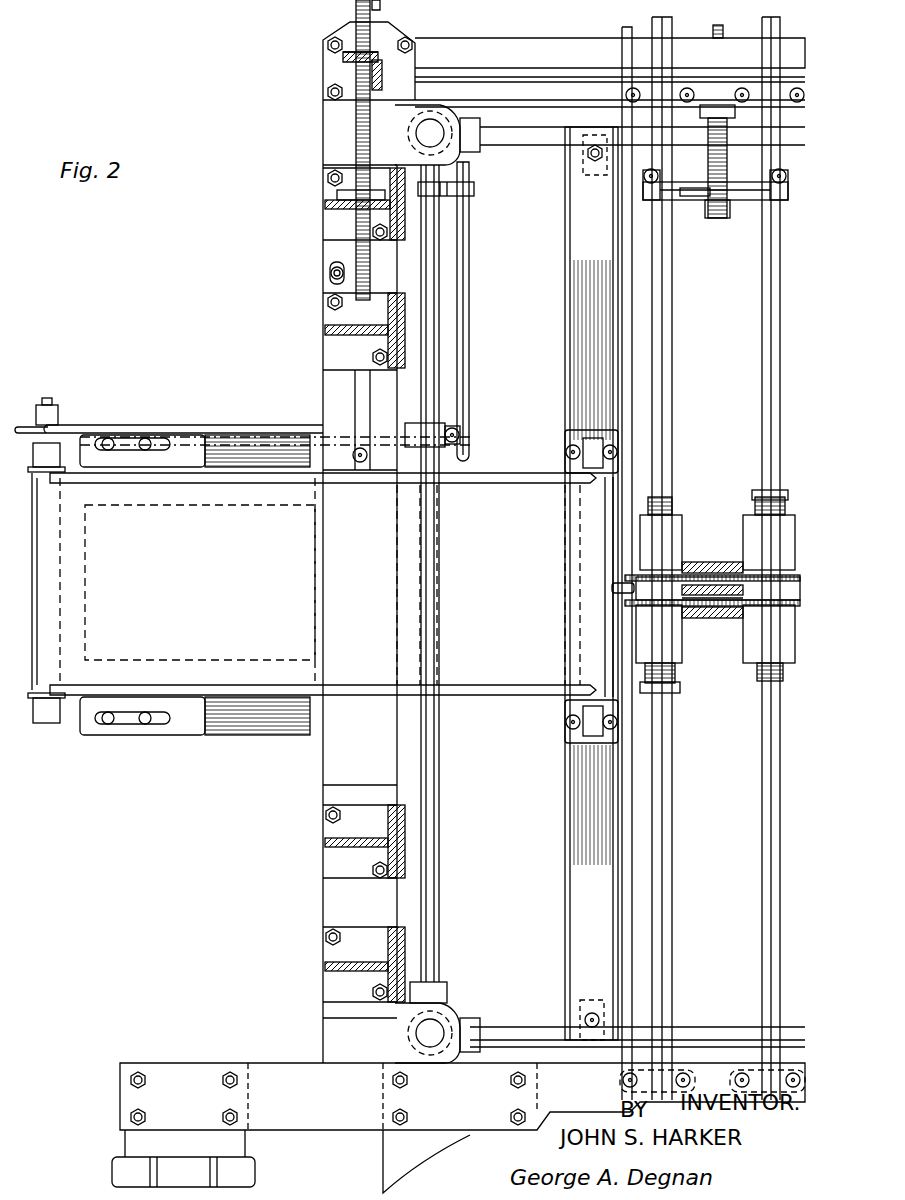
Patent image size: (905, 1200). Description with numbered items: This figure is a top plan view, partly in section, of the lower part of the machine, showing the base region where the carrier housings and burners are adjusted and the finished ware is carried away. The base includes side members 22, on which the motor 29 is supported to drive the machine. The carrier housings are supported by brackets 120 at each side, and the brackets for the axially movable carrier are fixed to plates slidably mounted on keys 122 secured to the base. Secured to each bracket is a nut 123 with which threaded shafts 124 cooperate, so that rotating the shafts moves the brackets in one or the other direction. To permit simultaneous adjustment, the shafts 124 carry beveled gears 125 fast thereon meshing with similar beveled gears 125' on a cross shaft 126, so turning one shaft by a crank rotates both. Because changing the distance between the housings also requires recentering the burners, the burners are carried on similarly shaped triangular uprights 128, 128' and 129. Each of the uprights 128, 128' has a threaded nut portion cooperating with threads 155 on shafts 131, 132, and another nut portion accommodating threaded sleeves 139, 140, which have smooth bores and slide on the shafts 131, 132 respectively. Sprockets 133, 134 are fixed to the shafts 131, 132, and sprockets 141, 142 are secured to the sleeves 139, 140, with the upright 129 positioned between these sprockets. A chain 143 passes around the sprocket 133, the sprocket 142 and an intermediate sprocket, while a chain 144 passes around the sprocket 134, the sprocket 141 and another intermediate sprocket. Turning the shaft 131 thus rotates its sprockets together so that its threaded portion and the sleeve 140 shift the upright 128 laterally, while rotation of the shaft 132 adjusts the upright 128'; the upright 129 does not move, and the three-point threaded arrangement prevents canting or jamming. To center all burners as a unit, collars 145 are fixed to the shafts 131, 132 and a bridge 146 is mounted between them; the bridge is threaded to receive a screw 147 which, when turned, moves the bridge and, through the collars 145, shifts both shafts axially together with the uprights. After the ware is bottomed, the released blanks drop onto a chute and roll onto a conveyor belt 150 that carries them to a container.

The side members 22 is at (316, 1130).
The motor 29 is at (110, 1170).
The brackets 120 is at (330, 205).
The keys 122 is at (360, 385).
The nut 123 is at (347, 196).
The threaded shafts 124 is at (348, 283).
The beveled gears 125 is at (321, 68).
The beveled gears 125' is at (320, 95).
The shaft 126 is at (523, 74).
The triangular upright 128 is at (712, 627).
The triangular upright 128' is at (712, 536).
The upright 129 is at (725, 584).
The shaft 131 is at (762, 762).
The shaft 132 is at (667, 733).
The sprocket 133 is at (770, 610).
The sprocket 134 is at (632, 577).
The threaded sleeve 139 is at (760, 490).
The threaded sleeve 140 is at (678, 676).
The sprocket 141 is at (778, 576).
The sprocket 142 is at (628, 602).
The chain 143 is at (738, 620).
The chain 144 is at (662, 608).
The collars 145 is at (757, 200).
The bridge 146 is at (686, 182).
The screw 147 is at (730, 180).
The conveyor belt 150 is at (314, 566).
The threads 155 is at (672, 498).